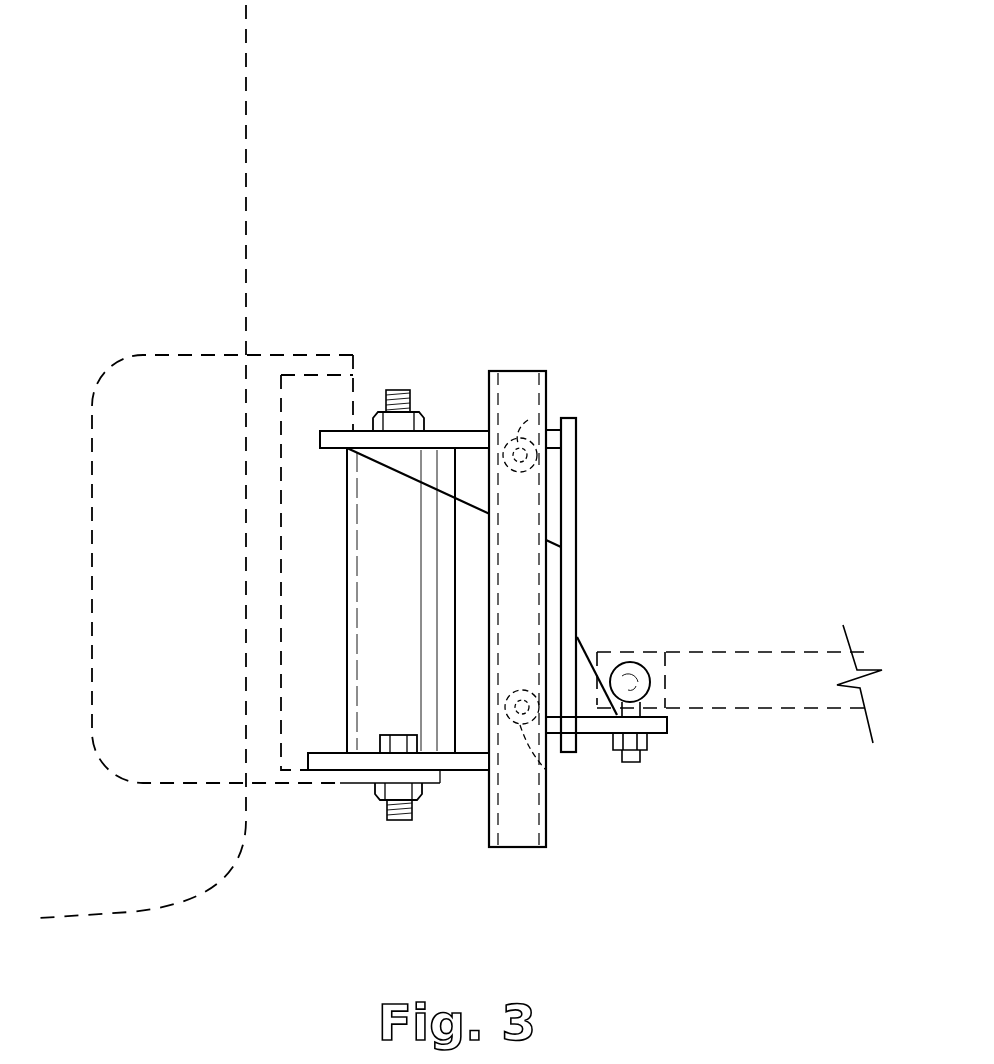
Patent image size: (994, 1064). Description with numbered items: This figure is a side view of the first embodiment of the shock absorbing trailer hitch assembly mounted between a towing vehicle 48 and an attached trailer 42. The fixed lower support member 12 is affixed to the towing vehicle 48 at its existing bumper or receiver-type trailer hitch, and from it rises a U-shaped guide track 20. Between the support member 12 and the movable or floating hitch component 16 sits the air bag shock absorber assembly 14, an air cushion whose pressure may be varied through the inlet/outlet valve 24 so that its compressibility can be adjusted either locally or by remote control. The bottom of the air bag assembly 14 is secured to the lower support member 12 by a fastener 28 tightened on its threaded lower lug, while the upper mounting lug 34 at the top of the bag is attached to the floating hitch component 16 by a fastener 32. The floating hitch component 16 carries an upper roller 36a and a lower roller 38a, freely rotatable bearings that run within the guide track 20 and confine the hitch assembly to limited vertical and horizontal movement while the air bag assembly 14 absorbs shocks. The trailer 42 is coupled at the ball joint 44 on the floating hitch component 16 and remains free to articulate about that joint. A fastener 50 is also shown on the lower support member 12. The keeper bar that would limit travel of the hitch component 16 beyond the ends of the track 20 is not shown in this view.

The fixed lower support member 12 is at (335, 760).
The air bag shock absorber assembly 14 is at (403, 613).
The floating hitch component 16 is at (578, 515).
The guide track 20 is at (515, 371).
The inlet/outlet valve 24 is at (397, 390).
The fastener 28 is at (425, 790).
The fastener 32 is at (425, 420).
The upper mounting lug 34 is at (412, 410).
The upper roller 36a is at (546, 400).
The lower roller 38a is at (552, 772).
The trailer 42 is at (750, 710).
The ball joint 44 is at (632, 660).
The towing vehicle 48 is at (248, 278).
The nut 50 is at (392, 735).